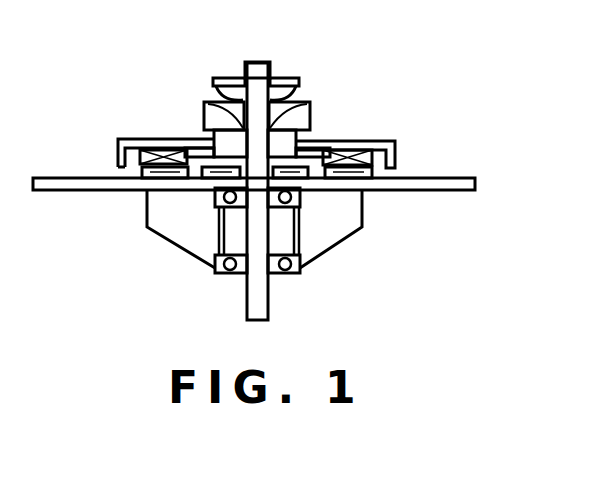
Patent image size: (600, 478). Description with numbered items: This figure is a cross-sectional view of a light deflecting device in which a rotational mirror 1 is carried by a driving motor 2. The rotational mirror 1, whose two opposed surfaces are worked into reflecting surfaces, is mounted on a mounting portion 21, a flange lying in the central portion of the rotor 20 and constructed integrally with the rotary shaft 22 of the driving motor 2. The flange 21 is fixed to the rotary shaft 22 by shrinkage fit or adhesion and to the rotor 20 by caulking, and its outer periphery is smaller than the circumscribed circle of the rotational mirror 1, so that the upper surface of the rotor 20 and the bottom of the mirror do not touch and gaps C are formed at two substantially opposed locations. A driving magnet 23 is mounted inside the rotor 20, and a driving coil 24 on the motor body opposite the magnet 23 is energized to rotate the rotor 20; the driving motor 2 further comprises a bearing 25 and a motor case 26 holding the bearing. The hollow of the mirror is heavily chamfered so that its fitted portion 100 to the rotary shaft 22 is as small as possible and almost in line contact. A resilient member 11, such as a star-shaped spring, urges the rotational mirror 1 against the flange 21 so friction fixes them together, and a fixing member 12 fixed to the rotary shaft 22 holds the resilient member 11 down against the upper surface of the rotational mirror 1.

The rotational mirror 1 is at (302, 138).
The driving motor 2 is at (445, 178).
The resilient member 11 is at (300, 95).
The fixing member 12 is at (232, 78).
The rotor 20 is at (395, 142).
The mounting portion 21 is at (228, 138).
The rotary shaft 22 is at (265, 60).
The driving magnet 23 is at (118, 152).
The driving coil 24 is at (147, 178).
The bearing 25 is at (305, 258).
The motor case 26 is at (187, 250).
The fitted portion 100 is at (204, 106).
The gaps C is at (308, 148).